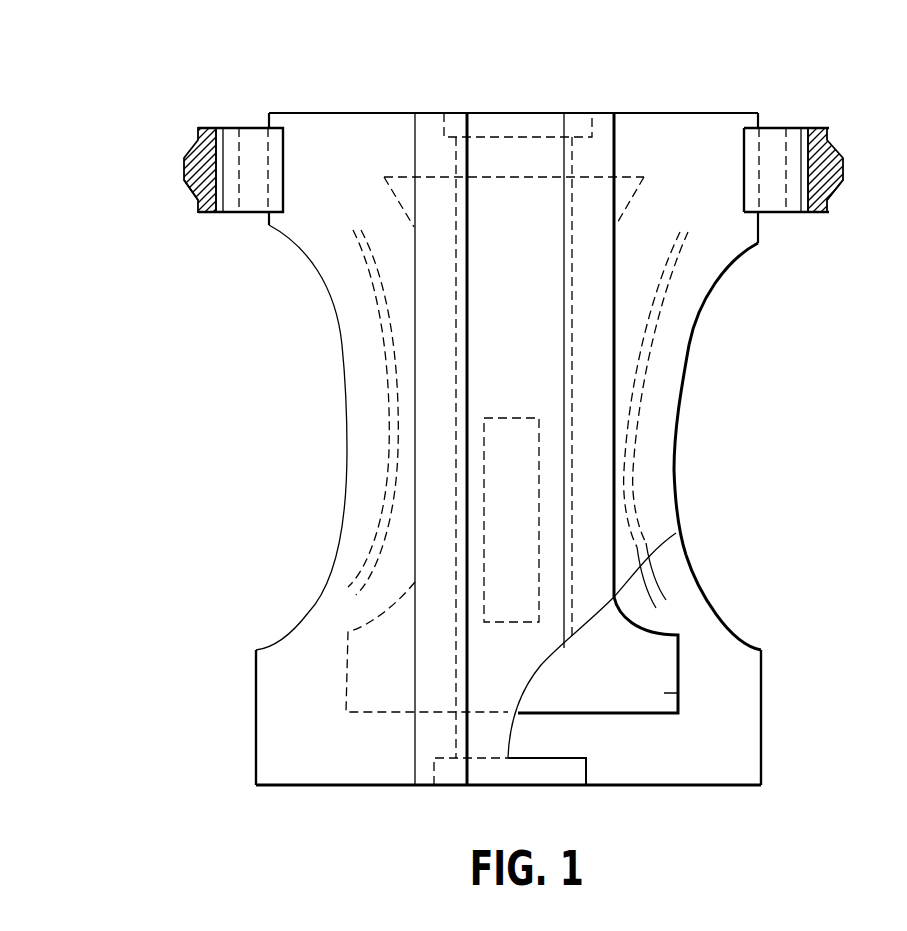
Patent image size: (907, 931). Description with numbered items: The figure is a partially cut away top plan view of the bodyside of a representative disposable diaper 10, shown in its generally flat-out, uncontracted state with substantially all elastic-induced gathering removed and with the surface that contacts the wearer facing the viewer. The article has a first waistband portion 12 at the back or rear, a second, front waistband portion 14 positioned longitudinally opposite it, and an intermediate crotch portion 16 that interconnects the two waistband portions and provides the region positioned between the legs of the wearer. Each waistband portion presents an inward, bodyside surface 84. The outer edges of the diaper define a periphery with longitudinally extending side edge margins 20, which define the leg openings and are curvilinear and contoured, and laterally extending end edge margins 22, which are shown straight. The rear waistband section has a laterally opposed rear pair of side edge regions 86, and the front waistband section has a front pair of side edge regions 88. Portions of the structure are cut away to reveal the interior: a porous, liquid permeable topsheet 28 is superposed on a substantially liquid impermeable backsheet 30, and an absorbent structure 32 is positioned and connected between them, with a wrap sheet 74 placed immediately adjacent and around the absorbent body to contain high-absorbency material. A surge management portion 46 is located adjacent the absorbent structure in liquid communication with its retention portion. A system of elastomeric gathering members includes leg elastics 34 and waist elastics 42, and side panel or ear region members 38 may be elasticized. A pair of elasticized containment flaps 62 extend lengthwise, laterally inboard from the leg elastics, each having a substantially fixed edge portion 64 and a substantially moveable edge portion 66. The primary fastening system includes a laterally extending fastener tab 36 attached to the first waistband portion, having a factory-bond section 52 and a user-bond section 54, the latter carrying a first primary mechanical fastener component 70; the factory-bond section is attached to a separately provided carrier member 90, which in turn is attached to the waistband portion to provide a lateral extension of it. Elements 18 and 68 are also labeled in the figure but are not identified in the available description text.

The diaper 10 is at (824, 338).
The first waistband portion 12 is at (346, 120).
The second waistband portion 14 is at (345, 775).
The intermediate crotch portion 16 is at (665, 418).
The leg edge 18 is at (725, 273).
The side edge margins 20 is at (350, 512).
The end edge margins 22 is at (668, 123).
The topsheet layer 28 is at (313, 630).
The backsheet layer 30 is at (707, 620).
The absorbent structure 32 is at (511, 645).
The leg elastics 34 is at (373, 310).
The fastener tab 36 is at (208, 212).
The side panel or ear region members 38 is at (287, 228).
The waist elastics 42 is at (508, 122).
The surge management portion 46 is at (516, 607).
The factory-bond section 52 is at (280, 176).
The user-bond section 54 is at (217, 128).
The containment flaps 62 is at (585, 318).
The fixed edge portion 64 is at (412, 268).
The moveable edge portion 66 is at (562, 215).
The backsheet 68 is at (568, 250).
The first primary mechanical fastener component 70 is at (188, 157).
The wrap sheet 74 is at (663, 693).
The bodyside surface 84 is at (392, 125).
The rear pair of side edge regions 86 is at (268, 120).
The front pair of side edge regions 88 is at (254, 697).
The carrier member 90 is at (252, 213).